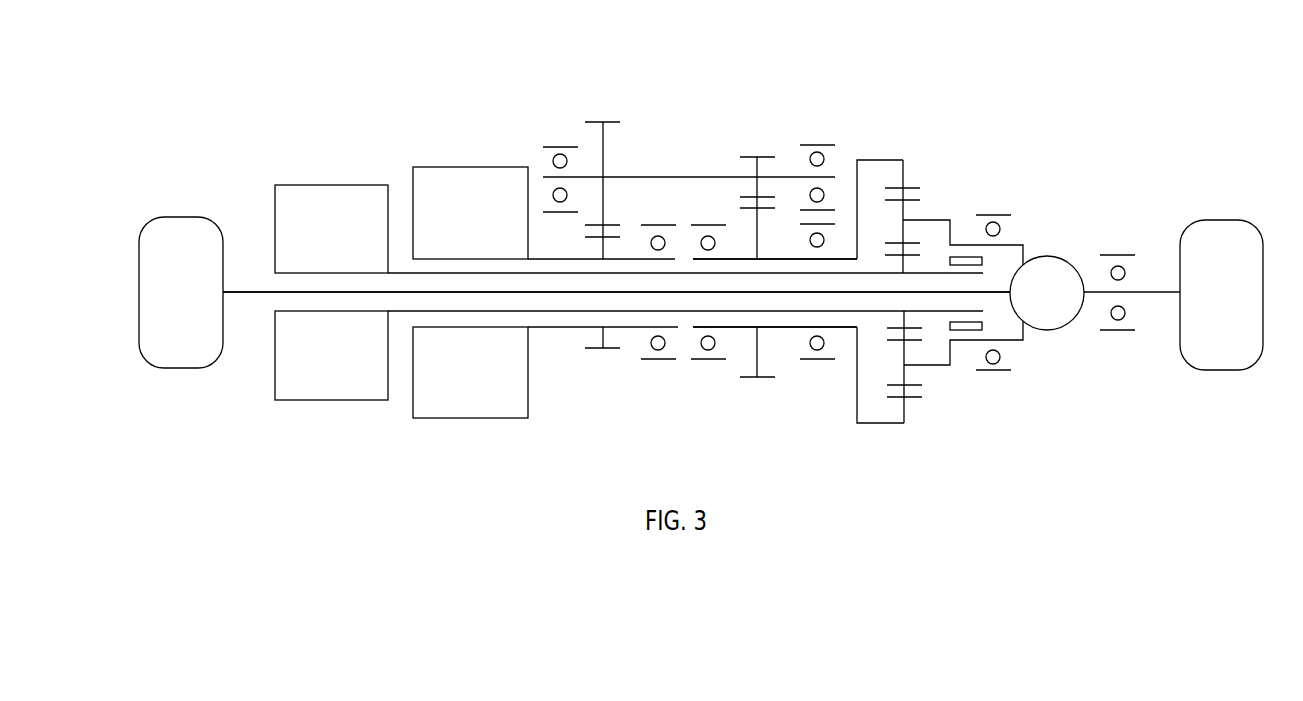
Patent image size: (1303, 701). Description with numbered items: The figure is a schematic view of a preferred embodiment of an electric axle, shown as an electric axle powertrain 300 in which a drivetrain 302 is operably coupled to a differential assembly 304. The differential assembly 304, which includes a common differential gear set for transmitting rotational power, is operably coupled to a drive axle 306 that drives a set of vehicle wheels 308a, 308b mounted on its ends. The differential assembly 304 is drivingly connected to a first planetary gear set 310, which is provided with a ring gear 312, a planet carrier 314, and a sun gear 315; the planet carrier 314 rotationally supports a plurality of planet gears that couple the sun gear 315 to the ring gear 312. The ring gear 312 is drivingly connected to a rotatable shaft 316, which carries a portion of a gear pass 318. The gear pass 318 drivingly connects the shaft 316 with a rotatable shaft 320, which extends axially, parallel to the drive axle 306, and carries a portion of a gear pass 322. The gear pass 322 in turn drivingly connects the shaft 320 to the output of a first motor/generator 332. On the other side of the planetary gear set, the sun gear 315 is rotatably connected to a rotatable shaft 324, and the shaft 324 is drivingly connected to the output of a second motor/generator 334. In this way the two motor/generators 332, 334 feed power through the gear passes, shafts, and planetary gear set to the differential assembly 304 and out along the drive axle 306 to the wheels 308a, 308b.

The electric axle powertrain 300 is at (1038, 75).
The drivetrain 302 is at (825, 83).
The differential assembly 304 is at (1064, 306).
The drive axle 306 is at (253, 292).
The vehicle wheel 308a is at (1210, 220).
The vehicle wheel 308b is at (172, 217).
The first planetary gear set 310 is at (892, 147).
The ring gear 312 is at (907, 187).
The planet carrier 314 is at (903, 210).
The sun gear 315 is at (888, 335).
The rotatable shaft 316 is at (783, 339).
The gear pass 318 is at (750, 157).
The rotatable shaft 320 is at (635, 172).
The gear pass 322 is at (607, 102).
The rotatable shaft 324 is at (781, 257).
The first motor/generator 332 is at (488, 233).
The second motor/generator 334 is at (347, 242).